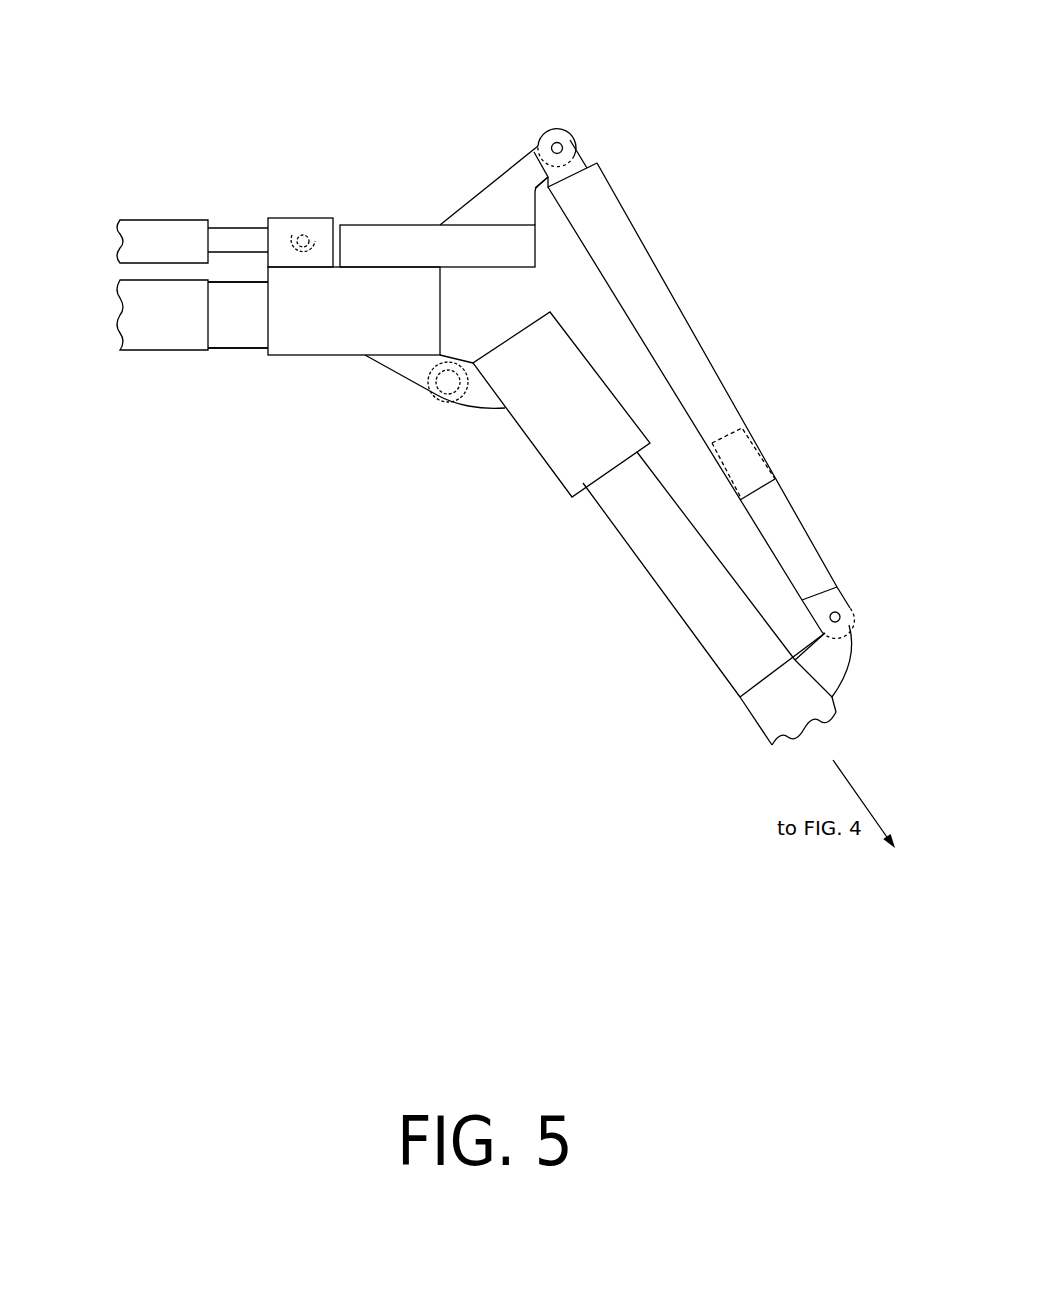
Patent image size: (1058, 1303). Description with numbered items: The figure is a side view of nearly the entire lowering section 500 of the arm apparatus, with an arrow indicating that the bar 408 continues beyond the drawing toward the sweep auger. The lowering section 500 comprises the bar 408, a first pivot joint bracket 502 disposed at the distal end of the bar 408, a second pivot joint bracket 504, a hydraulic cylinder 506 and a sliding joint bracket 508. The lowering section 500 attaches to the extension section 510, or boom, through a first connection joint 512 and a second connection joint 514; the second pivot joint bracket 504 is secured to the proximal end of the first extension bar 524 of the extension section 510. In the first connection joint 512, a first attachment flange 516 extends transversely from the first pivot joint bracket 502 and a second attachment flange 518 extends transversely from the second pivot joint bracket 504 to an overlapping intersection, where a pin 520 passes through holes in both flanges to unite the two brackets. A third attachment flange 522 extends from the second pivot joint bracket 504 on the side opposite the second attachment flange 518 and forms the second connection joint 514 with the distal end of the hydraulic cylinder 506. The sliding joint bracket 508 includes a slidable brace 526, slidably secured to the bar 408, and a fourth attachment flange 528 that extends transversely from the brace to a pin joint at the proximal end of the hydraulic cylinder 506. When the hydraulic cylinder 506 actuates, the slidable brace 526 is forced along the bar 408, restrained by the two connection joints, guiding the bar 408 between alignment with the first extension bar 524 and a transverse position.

The lowering section 500 is at (748, 55).
The extension section 510 is at (164, 174).
The first extension bar 524 is at (240, 349).
The second pivot joint bracket 504 is at (317, 357).
The third attachment flange 522 is at (505, 172).
The second connection joint 514 is at (568, 106).
The hydraulic cylinder 506 is at (703, 340).
The fourth attachment flange 528 is at (843, 672).
The sliding joint bracket 508 is at (729, 719).
The slidable brace 526 is at (748, 710).
The bar 408 is at (677, 606).
The first pivot joint bracket 502 is at (542, 460).
The first connection joint 512 is at (394, 461).
The second attachment flange 518 is at (387, 370).
The first attachment flange 516 is at (487, 410).
The pin 520 is at (447, 384).